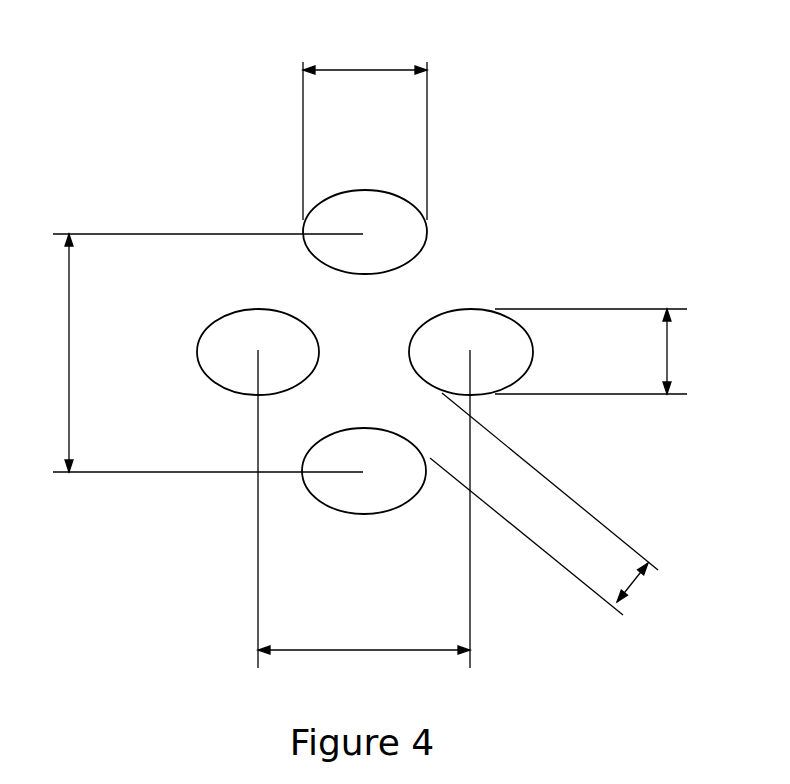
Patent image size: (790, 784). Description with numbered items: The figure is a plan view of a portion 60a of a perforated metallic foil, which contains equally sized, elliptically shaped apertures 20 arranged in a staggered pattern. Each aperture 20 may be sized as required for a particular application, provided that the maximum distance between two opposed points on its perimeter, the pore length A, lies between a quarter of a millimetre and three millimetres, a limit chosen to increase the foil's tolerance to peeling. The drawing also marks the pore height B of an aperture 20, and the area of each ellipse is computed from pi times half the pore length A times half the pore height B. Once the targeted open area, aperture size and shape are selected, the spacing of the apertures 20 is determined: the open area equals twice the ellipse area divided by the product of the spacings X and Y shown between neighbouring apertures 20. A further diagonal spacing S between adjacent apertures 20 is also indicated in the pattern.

The apertures 20 is at (240, 308).
The portion of perforated metallic foil 60a is at (435, 359).
The pore length A is at (365, 129).
The pore height B is at (594, 351).
The aperture spacing dimension X is at (206, 353).
The aperture spacing dimension Y is at (364, 516).
The diagonal spacing dimension S is at (544, 504).